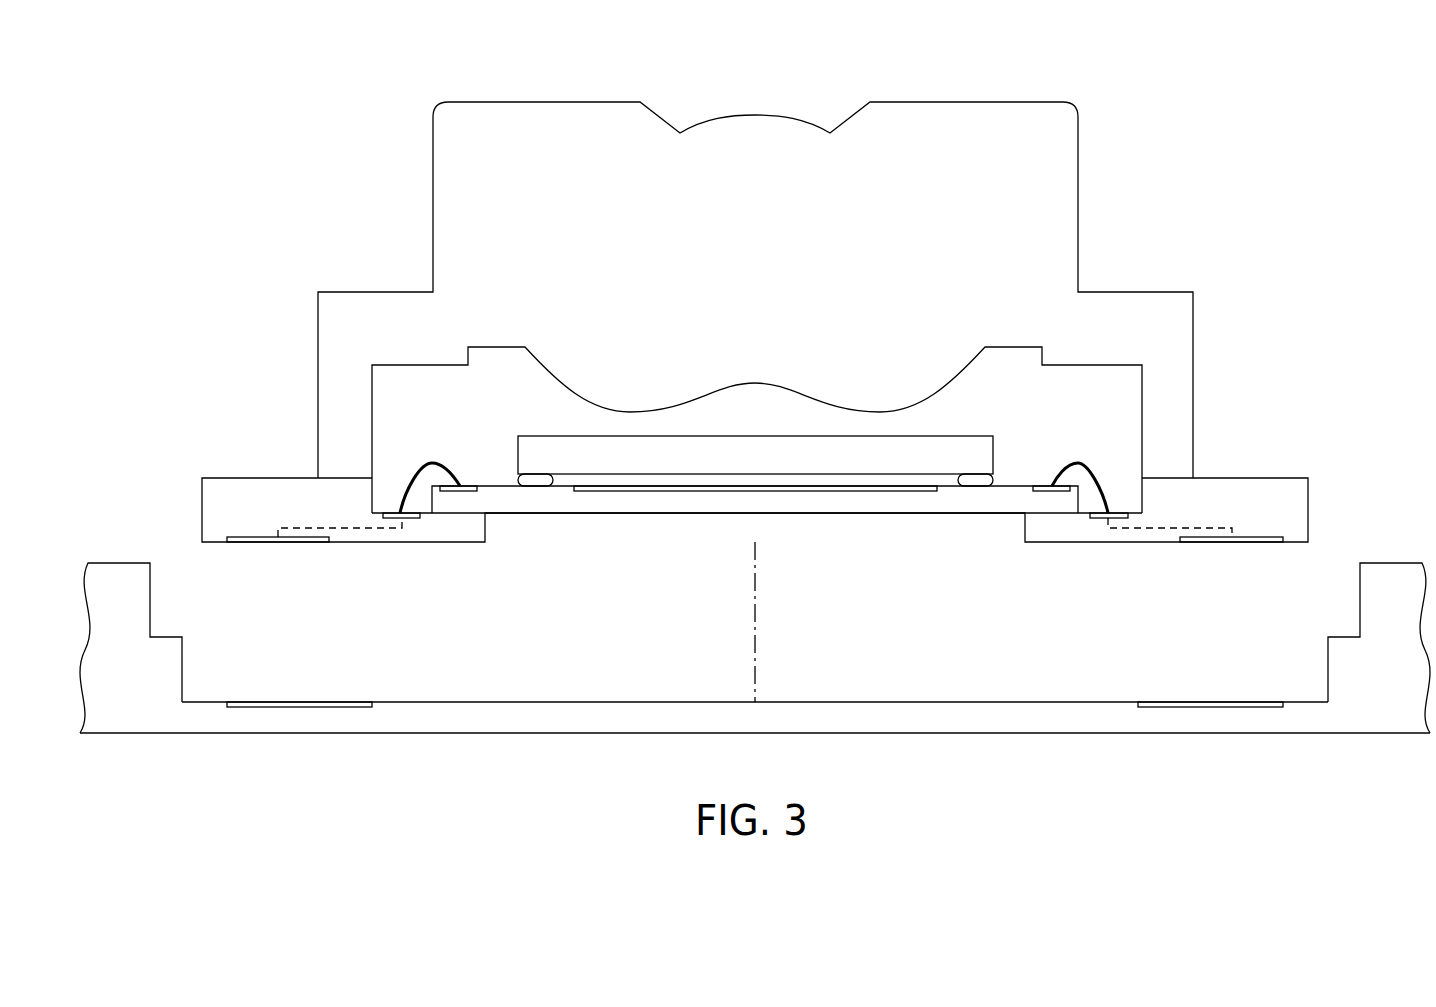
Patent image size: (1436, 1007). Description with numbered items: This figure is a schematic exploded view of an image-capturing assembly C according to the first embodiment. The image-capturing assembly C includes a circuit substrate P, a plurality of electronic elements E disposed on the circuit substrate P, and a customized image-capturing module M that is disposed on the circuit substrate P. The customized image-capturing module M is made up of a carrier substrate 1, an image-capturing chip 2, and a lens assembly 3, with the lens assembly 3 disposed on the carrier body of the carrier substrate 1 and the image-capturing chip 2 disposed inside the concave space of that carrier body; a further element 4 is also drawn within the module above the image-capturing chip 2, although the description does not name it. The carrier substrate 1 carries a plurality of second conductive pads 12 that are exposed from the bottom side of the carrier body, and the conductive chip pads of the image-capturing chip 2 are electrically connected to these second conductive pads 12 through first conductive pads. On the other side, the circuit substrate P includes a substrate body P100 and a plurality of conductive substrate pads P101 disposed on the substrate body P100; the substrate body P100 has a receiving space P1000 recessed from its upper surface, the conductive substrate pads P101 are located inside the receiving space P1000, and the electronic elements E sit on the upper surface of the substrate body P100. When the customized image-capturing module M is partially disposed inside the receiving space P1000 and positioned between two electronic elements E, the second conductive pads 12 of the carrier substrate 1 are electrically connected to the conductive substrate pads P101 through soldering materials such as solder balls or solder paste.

The image-capturing assembly C is at (90, 65).
The customized image-capturing module M is at (1105, 185).
The lens assembly 3 is at (435, 210).
The carrier substrate 1 is at (208, 512).
The second conductive pads 12 is at (252, 542).
The image-capturing chip 2 is at (853, 513).
The image sensor chip 4 is at (642, 445).
The circuit substrate P is at (115, 730).
The substrate body P100 is at (881, 717).
The conductive substrate pads P101 is at (307, 702).
The receiving space P1000 is at (583, 680).
The electronic elements E is at (118, 572).